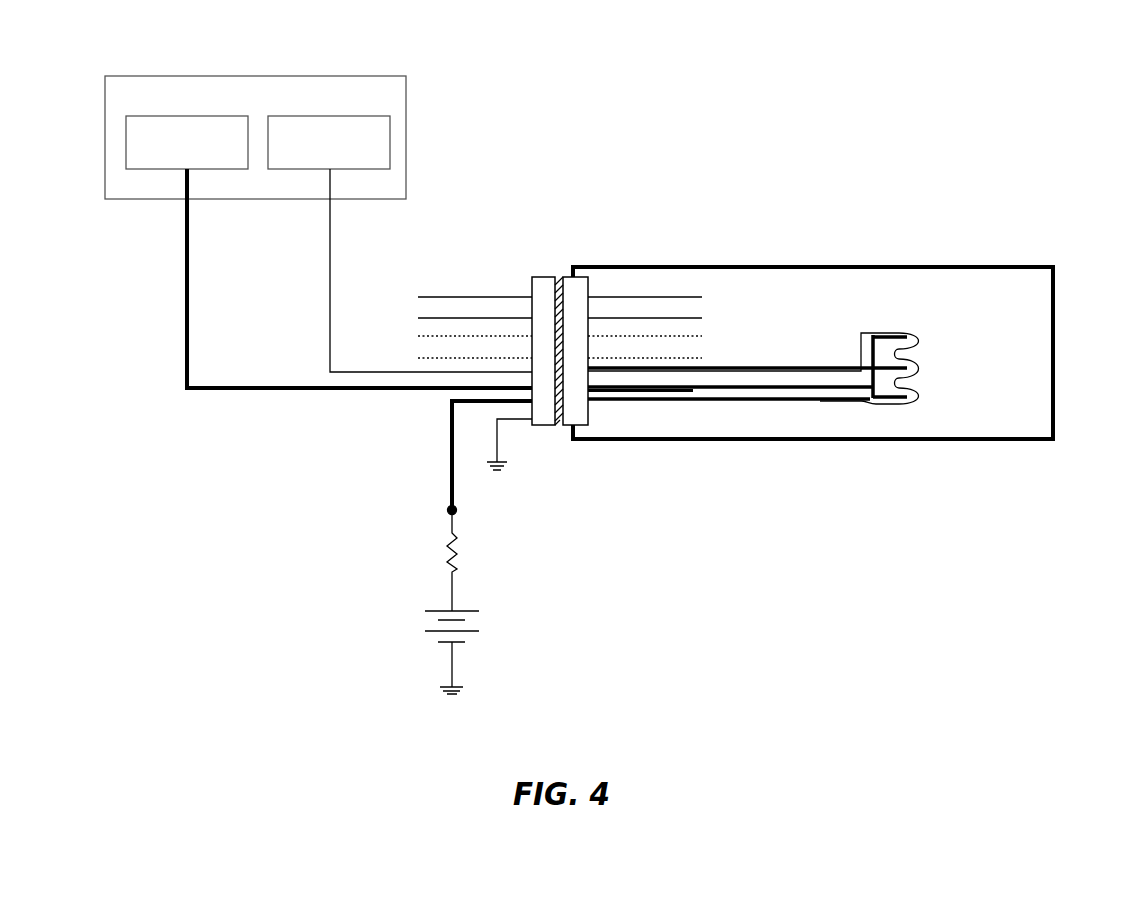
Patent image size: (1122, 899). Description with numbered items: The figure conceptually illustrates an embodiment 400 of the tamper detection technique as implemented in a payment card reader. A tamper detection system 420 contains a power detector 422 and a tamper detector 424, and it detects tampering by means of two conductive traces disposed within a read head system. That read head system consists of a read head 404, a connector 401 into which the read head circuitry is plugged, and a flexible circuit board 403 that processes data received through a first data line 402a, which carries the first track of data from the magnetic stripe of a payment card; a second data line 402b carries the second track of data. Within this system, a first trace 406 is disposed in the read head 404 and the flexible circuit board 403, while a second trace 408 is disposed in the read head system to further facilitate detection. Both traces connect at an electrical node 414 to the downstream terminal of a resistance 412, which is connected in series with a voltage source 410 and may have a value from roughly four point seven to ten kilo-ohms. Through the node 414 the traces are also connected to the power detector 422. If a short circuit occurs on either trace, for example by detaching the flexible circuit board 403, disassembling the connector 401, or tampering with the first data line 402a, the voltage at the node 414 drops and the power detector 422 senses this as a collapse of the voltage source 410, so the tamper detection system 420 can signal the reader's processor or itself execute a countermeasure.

The embodiment 400 is at (1045, 59).
The connector 401 is at (593, 258).
The first data line 402a is at (430, 297).
The second data line 402b is at (430, 335).
The flexible circuit board 403 is at (748, 367).
The read head 404 is at (873, 330).
The first trace 406 is at (903, 331).
The second trace 408 is at (932, 265).
The voltage source 410 is at (468, 610).
The resistance 412 is at (455, 545).
The electrical node 414 is at (455, 508).
The tamper detection system 420 is at (255, 137).
The power detector 422 is at (187, 142).
The tamper detector 424 is at (329, 142).